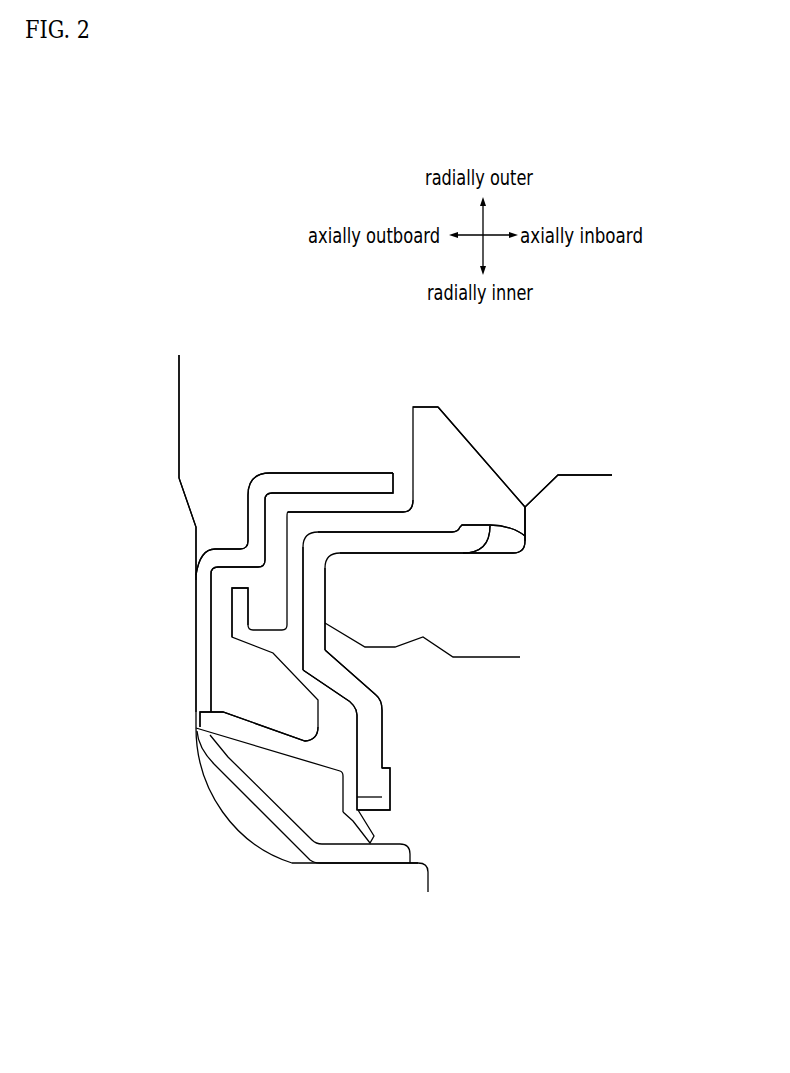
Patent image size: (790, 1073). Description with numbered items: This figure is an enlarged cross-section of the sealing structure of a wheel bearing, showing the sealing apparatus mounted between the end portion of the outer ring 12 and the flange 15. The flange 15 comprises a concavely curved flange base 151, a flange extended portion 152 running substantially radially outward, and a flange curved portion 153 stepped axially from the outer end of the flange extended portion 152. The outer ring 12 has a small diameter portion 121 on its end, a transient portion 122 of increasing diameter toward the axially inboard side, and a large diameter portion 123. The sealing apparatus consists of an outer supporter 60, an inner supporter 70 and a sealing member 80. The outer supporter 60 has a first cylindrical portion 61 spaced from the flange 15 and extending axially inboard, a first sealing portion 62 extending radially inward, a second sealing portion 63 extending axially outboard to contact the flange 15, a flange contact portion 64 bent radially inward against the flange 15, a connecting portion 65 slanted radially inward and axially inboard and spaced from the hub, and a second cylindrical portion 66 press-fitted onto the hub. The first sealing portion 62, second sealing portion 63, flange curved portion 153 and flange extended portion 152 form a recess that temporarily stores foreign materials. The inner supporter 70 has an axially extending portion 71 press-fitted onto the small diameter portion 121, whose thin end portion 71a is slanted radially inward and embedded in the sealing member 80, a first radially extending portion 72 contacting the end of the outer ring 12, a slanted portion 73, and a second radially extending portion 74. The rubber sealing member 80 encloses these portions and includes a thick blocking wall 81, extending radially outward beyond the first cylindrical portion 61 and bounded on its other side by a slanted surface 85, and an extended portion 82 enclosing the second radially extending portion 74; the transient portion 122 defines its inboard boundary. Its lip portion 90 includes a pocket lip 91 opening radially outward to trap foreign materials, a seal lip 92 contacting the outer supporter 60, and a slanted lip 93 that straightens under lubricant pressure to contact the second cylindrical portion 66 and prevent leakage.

The outer ring 12 is at (453, 630).
The flange 15 is at (160, 390).
The outer supporter 60 is at (188, 626).
The first cylindrical portion 61 is at (340, 471).
The first sealing portion 62 is at (240, 506).
The second sealing portion 63 is at (230, 552).
The flange contact portion 64 is at (200, 603).
The connecting portion 65 is at (235, 778).
The second cylindrical portion 66 is at (363, 858).
The inner supporter 70 is at (392, 715).
The axially extending portion 71 is at (425, 553).
The thin end portion 71a is at (505, 536).
The first radially extending portion 72 is at (320, 598).
The slanted portion 73 is at (343, 676).
The second radially extending portion 74 is at (377, 748).
The sealing member 80 is at (458, 413).
The blocking wall 81 is at (418, 405).
The extended portion 82 is at (390, 790).
The slanted surface 85 is at (485, 450).
The lip portion 90 is at (92, 212).
The pocket lip 91 is at (240, 637).
The seal lip 92 is at (223, 717).
The slanted lip 93 is at (353, 820).
The small diameter portion 121 is at (388, 577).
The transient portion 122 is at (527, 545).
The large diameter portion 123 is at (600, 483).
The flange base 151 is at (262, 855).
The flange extended portion 152 is at (197, 577).
The flange curved portion 153 is at (178, 450).